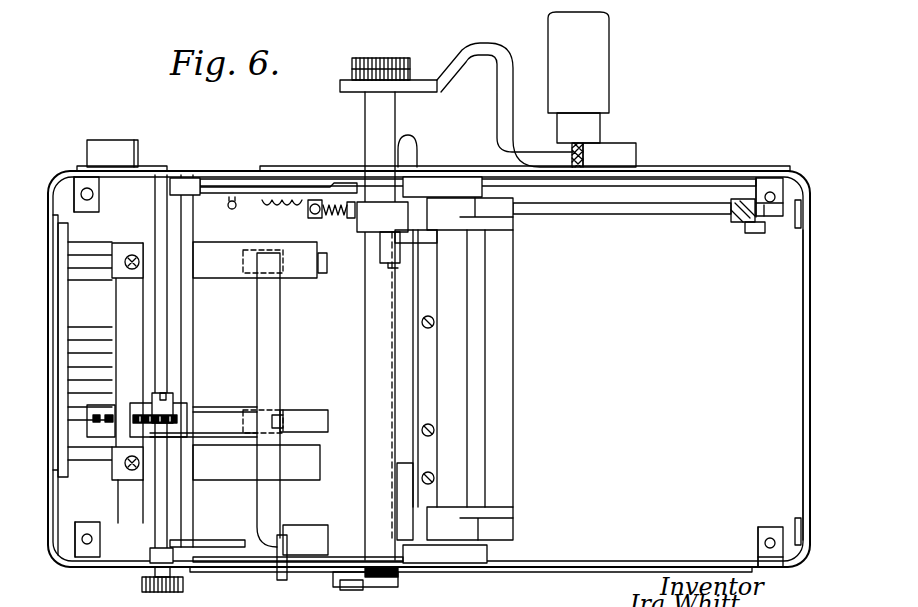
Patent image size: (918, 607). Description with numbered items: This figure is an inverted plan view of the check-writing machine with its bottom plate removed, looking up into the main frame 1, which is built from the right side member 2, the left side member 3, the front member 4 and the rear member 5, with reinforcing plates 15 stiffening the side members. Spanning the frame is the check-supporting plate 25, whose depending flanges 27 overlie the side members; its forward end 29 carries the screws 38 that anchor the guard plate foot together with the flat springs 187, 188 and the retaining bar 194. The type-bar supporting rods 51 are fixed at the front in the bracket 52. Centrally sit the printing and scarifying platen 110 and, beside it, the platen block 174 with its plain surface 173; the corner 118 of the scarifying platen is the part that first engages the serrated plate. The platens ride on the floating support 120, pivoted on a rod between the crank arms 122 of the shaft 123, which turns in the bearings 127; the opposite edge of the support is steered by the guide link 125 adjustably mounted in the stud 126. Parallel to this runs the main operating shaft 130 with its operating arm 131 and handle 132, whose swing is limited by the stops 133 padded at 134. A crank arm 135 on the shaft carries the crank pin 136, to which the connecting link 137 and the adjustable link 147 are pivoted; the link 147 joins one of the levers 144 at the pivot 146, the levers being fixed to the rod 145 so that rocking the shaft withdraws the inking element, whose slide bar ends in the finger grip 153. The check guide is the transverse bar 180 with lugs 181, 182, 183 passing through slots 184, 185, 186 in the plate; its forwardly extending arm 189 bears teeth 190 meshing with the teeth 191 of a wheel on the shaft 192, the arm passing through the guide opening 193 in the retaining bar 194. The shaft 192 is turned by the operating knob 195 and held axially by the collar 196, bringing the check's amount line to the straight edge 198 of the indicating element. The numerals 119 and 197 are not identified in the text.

The main frame 1 is at (795, 174).
The right side member 2 is at (240, 168).
The left side member 3 is at (257, 563).
The front member 4 is at (48, 372).
The rear member 5 is at (800, 360).
The reinforcing plates 15 is at (217, 177).
The check-supporting plate 25 is at (572, 340).
The depending flanges 27 is at (345, 167).
The forward end of check-supporting plate 29 is at (140, 515).
The screws 38 is at (132, 250).
The supporting rod 51 is at (90, 357).
The bracket 52 is at (63, 313).
The printing and scarifying platen 110 is at (408, 350).
The corner of scarifying platen 118 is at (77, 175).
The corner block 119 is at (100, 197).
The floating support 120 is at (425, 398).
The crank arms 122 is at (517, 227).
The shaft 123 is at (462, 385).
The guide link 125 is at (665, 203).
The stud 126 is at (751, 233).
The bearings 127 is at (482, 188).
The main operating shaft 130 is at (364, 128).
The operating arm 131 is at (495, 42).
The handle 132 is at (600, 63).
The stops 133 is at (107, 140).
The padding 134 is at (140, 152).
The crank arm 135 is at (577, 145).
The crank pin 136 is at (397, 264).
The connecting link 137 is at (482, 243).
The levers 144 is at (200, 196).
The rod 145 is at (194, 265).
The pivot connection 146 is at (233, 208).
The longitudinally adjustable link 147 is at (280, 203).
The finger grip 153 is at (415, 153).
The plain surface 173 is at (393, 512).
The platen block 174 is at (403, 487).
The bar 180 is at (275, 342).
The lug 181 is at (283, 272).
The lug 182 is at (285, 425).
The lug 183 is at (288, 541).
The slot 184 is at (323, 265).
The slot 185 is at (302, 410).
The slot 186 is at (300, 528).
The flat spring 187 is at (238, 283).
The flat spring 188 is at (223, 473).
The forwardly extending arm 189 is at (218, 407).
The teeth 190 is at (90, 422).
The teeth 191 is at (173, 417).
The shaft 192 is at (167, 333).
The guide opening 193 is at (140, 402).
The retaining bar 194 is at (131, 361).
The operating knob 195 is at (182, 588).
The collar 196 is at (152, 556).
The knob 197 is at (380, 587).
The straight edge 198 is at (380, 582).